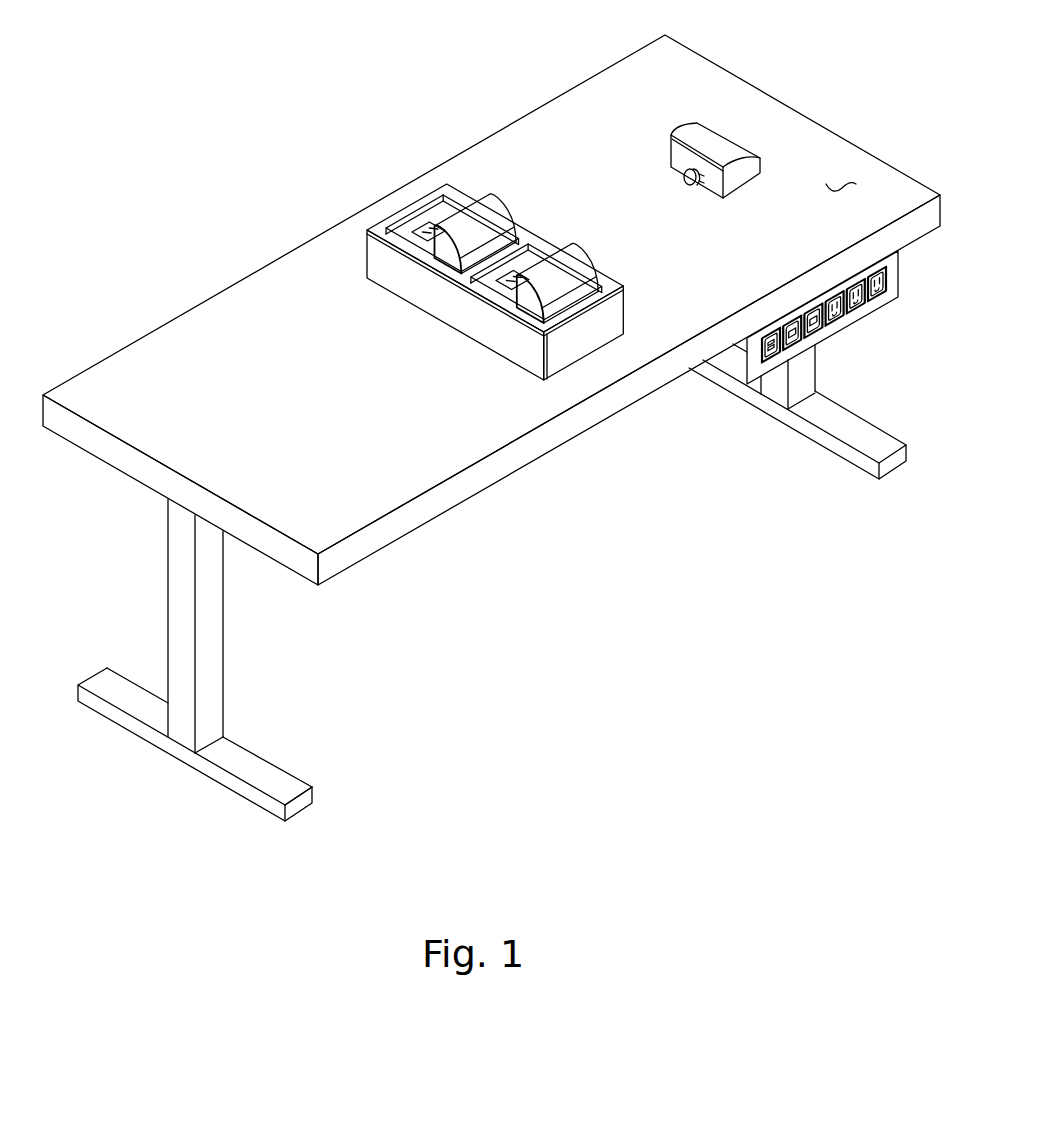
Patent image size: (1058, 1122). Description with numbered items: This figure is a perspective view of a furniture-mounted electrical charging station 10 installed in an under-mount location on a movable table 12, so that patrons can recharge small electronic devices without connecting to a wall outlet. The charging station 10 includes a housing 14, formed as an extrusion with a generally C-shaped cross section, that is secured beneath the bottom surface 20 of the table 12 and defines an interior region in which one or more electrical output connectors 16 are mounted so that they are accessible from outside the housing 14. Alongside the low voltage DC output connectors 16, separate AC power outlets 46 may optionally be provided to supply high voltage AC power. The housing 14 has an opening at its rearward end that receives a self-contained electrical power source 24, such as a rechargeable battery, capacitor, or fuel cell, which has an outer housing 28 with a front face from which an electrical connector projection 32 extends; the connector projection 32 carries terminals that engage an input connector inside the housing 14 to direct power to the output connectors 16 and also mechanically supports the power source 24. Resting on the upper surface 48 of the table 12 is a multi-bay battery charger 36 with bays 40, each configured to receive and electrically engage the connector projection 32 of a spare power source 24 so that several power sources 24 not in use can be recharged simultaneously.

The furniture-mounted electrical charging station 10 is at (502, 428).
The table 12 is at (491, 310).
The housing 14 is at (740, 352).
The electrical output connectors 16 is at (773, 358).
The bottom surface 20 is at (443, 525).
The self-contained electrical power source 24 is at (619, 164).
The outer housing 28 is at (720, 143).
The electrical connector projection 32 is at (681, 196).
The multi-bay battery charger 36 is at (480, 243).
The bays 40 is at (428, 198).
The AC power outlets 46 is at (836, 322).
The upper surface 48 is at (853, 182).